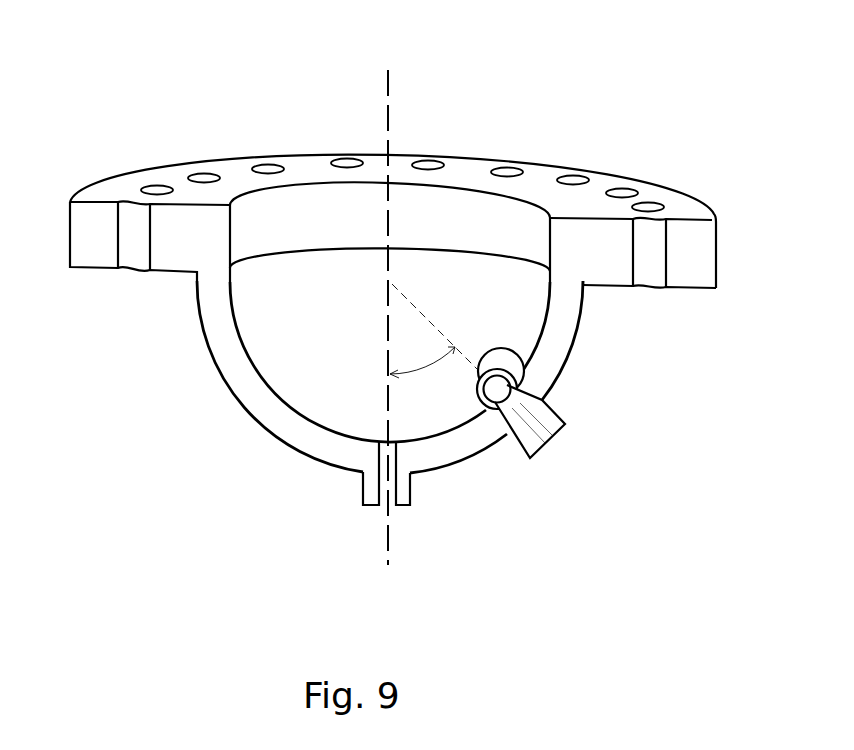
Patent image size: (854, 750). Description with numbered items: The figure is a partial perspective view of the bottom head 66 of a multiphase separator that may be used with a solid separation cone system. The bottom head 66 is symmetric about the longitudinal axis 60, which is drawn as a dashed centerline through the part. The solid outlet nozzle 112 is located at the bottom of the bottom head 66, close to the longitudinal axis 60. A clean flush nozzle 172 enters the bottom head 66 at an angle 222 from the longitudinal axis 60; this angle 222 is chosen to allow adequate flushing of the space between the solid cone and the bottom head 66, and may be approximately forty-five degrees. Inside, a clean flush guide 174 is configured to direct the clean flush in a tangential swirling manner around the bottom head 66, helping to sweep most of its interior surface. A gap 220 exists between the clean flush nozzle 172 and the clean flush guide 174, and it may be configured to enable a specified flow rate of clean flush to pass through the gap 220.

The longitudinal axis 60 is at (379, 128).
The bottom head 66 is at (628, 80).
The solid outlet nozzle 112 is at (391, 507).
The clean flush nozzle 172 is at (553, 440).
The clean flush guide 174 is at (512, 362).
The gap 220 is at (512, 387).
The angle 222 is at (423, 368).